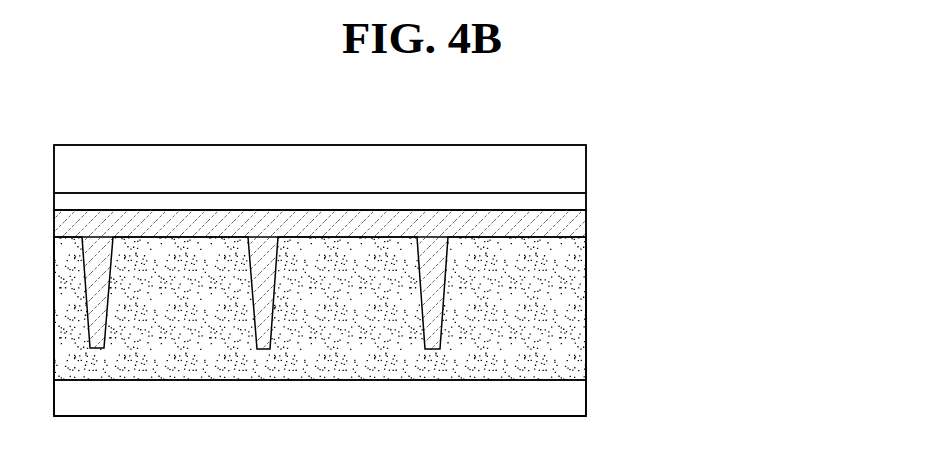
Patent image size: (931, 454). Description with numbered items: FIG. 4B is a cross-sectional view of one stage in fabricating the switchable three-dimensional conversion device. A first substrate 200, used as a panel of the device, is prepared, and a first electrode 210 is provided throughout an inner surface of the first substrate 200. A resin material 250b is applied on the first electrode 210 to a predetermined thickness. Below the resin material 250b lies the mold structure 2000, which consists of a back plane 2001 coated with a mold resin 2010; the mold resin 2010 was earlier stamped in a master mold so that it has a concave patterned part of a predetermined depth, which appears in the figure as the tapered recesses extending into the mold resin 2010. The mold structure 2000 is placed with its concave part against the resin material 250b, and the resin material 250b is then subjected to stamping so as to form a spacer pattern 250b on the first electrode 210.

The first substrate 200 is at (572, 170).
The first electrode 210 is at (572, 201).
The resin material 250b is at (572, 226).
The mold resin 2010 is at (572, 305).
The back plane 2001 is at (572, 397).
The mold structure 2000 is at (438, 326).